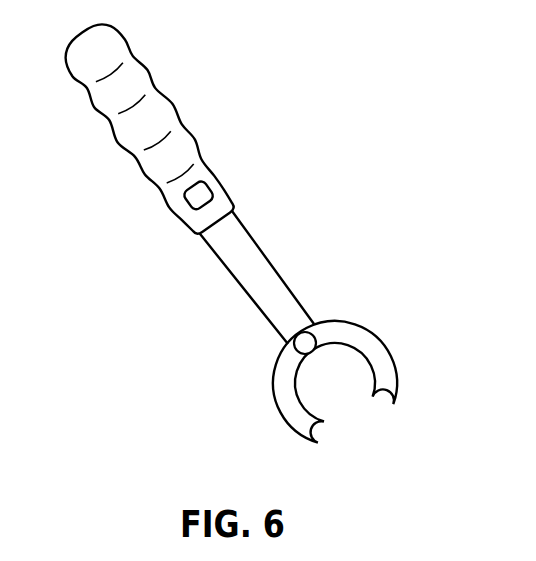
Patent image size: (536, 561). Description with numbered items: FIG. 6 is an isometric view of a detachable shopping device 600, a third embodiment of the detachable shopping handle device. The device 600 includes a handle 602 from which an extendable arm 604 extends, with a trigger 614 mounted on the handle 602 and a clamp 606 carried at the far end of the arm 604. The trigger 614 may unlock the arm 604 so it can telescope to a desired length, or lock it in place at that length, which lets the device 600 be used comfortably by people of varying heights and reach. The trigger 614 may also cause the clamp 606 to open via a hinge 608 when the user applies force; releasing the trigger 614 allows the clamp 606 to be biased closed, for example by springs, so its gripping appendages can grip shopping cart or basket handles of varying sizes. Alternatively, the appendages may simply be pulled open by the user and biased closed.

The detachable shopping device 600 is at (403, 101).
The handle 602 is at (113, 142).
The extendable arm 604 is at (275, 267).
The clamp 606 is at (383, 342).
The hinge 608 is at (293, 343).
The trigger 614 is at (215, 183).